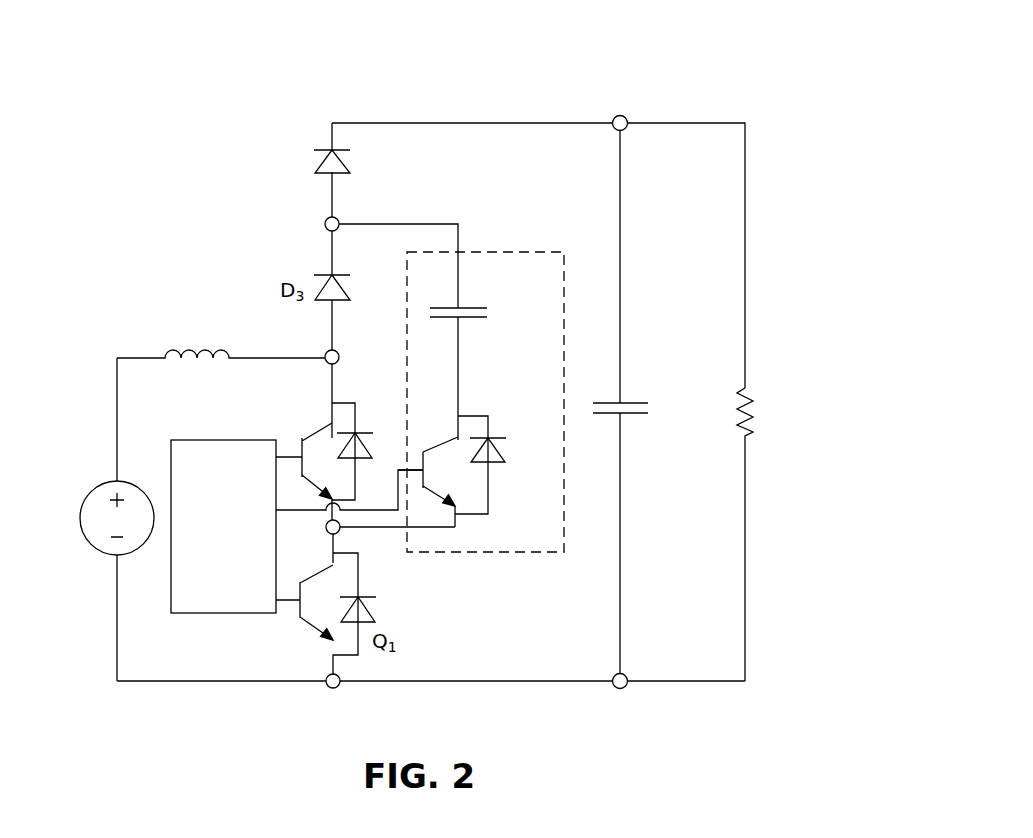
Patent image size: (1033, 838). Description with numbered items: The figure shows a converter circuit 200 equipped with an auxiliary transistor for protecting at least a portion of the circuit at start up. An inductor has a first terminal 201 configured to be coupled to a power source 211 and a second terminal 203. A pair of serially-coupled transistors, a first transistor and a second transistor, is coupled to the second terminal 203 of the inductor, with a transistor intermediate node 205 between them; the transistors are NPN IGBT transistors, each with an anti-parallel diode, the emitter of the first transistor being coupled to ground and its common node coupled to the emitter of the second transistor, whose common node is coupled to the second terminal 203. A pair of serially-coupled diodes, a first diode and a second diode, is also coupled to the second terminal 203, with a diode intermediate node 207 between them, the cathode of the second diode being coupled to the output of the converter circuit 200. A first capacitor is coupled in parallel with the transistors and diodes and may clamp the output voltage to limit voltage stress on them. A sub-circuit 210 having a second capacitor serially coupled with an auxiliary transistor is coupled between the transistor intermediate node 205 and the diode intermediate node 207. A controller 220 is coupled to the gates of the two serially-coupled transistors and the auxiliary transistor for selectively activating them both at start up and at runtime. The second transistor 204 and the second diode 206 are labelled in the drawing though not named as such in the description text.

The converter circuit 200 is at (757, 56).
The first terminal 201 is at (130, 358).
The second terminal 203 is at (339, 353).
The switch Q2 204 is at (283, 428).
The transistor intermediate node 205 is at (340, 531).
The diode D4 206 is at (262, 146).
The diode intermediate node 207 is at (339, 220).
The sub-circuit 210 is at (521, 252).
The power source 211 is at (95, 548).
The controller 220 is at (170, 593).